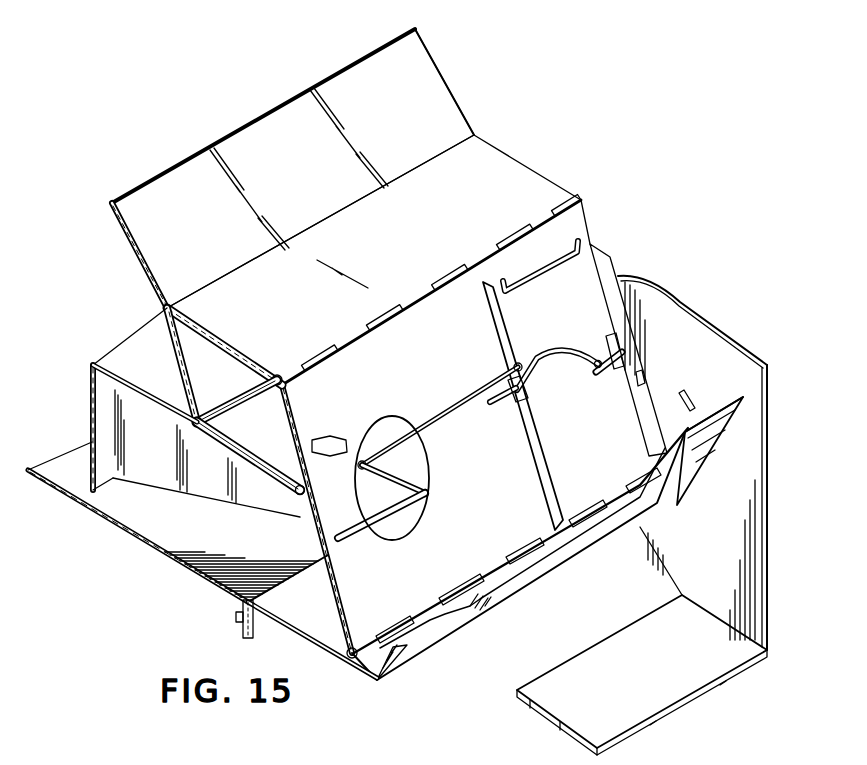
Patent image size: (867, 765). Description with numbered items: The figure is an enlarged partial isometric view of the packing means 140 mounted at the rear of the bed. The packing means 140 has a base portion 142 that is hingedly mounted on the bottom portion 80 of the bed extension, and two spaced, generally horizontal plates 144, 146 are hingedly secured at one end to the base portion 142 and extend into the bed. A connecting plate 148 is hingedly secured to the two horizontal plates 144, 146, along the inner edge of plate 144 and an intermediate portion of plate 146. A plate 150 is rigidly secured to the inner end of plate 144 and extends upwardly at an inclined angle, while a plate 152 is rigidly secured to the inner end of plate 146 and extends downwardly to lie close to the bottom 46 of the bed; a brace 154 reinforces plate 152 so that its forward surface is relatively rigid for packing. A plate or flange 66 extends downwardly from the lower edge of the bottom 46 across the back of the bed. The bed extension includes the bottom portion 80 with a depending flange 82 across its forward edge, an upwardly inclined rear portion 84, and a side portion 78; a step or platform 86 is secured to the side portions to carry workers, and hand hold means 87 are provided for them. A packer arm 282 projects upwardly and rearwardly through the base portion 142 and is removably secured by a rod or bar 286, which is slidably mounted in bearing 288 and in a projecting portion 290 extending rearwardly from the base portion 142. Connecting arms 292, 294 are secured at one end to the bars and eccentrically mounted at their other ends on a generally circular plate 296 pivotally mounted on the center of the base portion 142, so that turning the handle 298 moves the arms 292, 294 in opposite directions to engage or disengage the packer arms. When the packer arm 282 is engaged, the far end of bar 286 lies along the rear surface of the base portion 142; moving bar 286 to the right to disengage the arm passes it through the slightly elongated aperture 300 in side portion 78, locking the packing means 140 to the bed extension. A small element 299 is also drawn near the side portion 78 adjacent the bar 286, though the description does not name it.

The packing means 140 is at (481, 110).
The plate 150 is at (282, 128).
The horizontal plate 144 is at (382, 259).
The base portion 142 is at (438, 318).
The connecting plate 148 is at (188, 352).
The horizontal plate 146 is at (241, 452).
The plate 152 is at (92, 430).
The brace 154 is at (268, 495).
The bottom 46 is at (188, 547).
The bottom portion 80 is at (314, 612).
The depending flange 82 is at (258, 618).
The plate or flange 66 is at (240, 624).
The step or platform 86 is at (604, 652).
The side portion 78 is at (698, 565).
The upwardly inclined rear portion 84 is at (700, 442).
The aperture or opening 300 is at (688, 395).
The catch 299 is at (641, 380).
The projecting portion 290 is at (545, 472).
The hand hold means 87 is at (550, 280).
The bearing 288 is at (608, 340).
The rod or bar 286 is at (545, 385).
The packer arm 282 is at (516, 410).
The connecting arm 294 is at (481, 400).
The circular plate 296 is at (412, 518).
The connecting arm 292 is at (362, 542).
The handle 298 is at (330, 438).